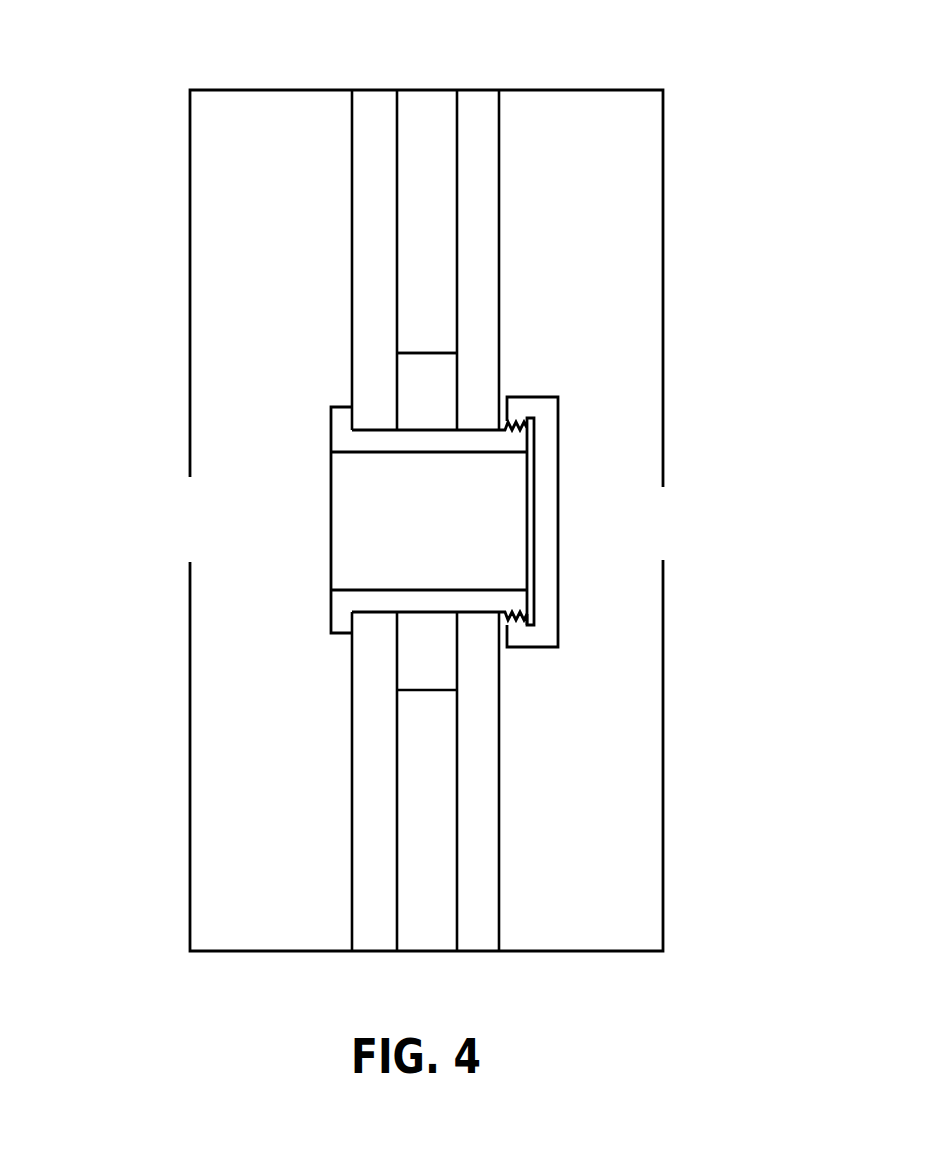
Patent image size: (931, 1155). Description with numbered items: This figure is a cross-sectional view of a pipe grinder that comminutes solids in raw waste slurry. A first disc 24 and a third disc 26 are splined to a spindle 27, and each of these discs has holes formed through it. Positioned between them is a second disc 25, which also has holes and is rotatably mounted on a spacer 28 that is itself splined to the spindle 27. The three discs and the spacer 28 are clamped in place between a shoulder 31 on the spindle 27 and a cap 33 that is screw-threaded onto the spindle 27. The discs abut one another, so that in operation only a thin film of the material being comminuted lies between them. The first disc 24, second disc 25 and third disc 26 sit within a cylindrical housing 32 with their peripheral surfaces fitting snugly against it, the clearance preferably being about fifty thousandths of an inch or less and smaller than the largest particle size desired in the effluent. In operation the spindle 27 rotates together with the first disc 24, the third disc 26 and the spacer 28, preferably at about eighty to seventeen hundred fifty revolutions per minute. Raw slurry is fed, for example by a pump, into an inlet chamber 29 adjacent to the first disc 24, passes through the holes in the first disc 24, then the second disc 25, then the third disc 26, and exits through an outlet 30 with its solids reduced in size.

The first disc 24 is at (481, 108).
The second disc 25 is at (431, 104).
The third disc 26 is at (378, 107).
The spindle 27 is at (357, 598).
The spacer 28 is at (410, 391).
The inlet chamber 29 is at (660, 523).
The outlet 30 is at (184, 529).
The shoulder 31 is at (340, 413).
The cylindrical housing 32 is at (227, 90).
The cap 33 is at (545, 443).